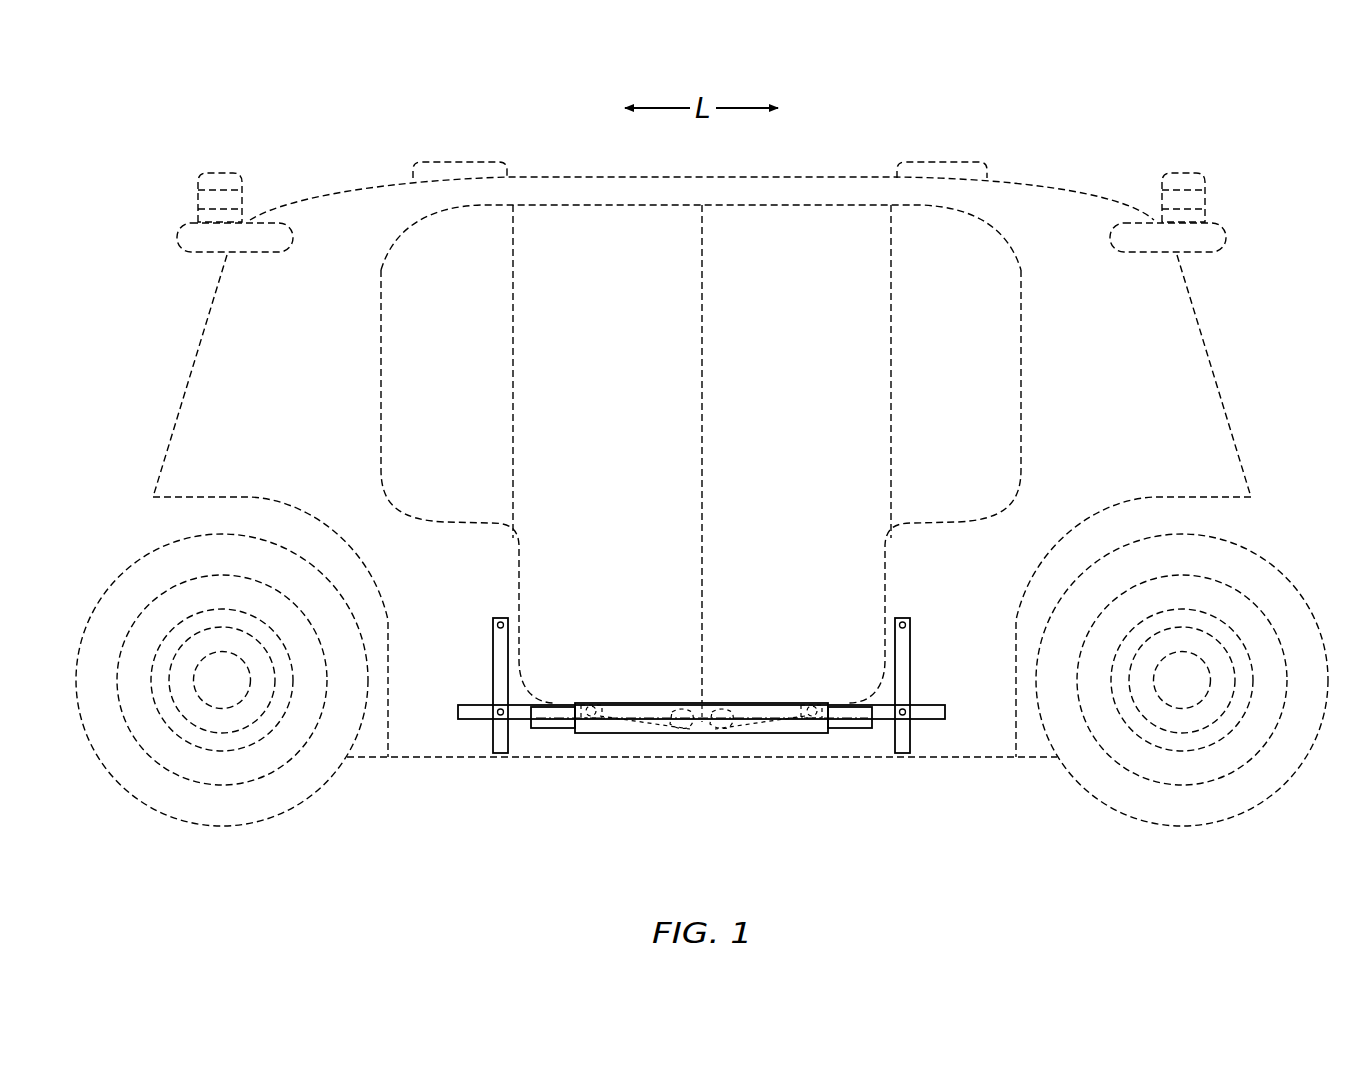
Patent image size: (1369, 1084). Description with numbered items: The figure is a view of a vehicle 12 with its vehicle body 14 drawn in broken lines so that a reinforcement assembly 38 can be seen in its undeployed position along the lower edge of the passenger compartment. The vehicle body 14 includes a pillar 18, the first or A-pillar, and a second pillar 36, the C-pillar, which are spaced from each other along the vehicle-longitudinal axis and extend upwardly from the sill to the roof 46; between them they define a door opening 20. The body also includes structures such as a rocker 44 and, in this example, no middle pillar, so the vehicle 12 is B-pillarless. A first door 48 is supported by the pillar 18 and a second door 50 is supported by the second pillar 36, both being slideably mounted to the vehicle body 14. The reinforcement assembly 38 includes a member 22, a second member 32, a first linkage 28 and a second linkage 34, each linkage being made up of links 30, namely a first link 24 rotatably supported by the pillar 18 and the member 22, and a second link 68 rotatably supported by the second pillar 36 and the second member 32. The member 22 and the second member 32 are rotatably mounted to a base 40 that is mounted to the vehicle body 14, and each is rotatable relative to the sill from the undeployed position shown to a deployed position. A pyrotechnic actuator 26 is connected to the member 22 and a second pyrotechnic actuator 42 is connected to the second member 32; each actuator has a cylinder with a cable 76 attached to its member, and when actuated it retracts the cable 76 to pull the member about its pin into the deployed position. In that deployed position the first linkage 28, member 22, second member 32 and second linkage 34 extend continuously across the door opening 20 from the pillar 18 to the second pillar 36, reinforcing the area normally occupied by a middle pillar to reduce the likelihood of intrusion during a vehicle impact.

The vehicle 12 is at (1074, 124).
The vehicle body 14 is at (340, 188).
The pillar 18 is at (518, 585).
The door opening 20 is at (606, 216).
The member 22 is at (642, 733).
The first link 24 is at (491, 651).
The pyrotechnic actuator 26 is at (552, 728).
The first linkage 28 is at (476, 688).
The link 30 is at (468, 720).
The second member 32 is at (760, 733).
The second linkage 34 is at (928, 688).
The second pillar 36 is at (890, 583).
The reinforcement assembly 38 is at (607, 735).
The base 40 is at (805, 735).
The second pyrotechnic actuator 42 is at (850, 728).
The rocker 44 is at (780, 735).
The roof 46 is at (820, 190).
The first door 48 is at (505, 392).
The second door 50 is at (899, 392).
The second link 68 is at (912, 651).
The cable 76 is at (745, 735).